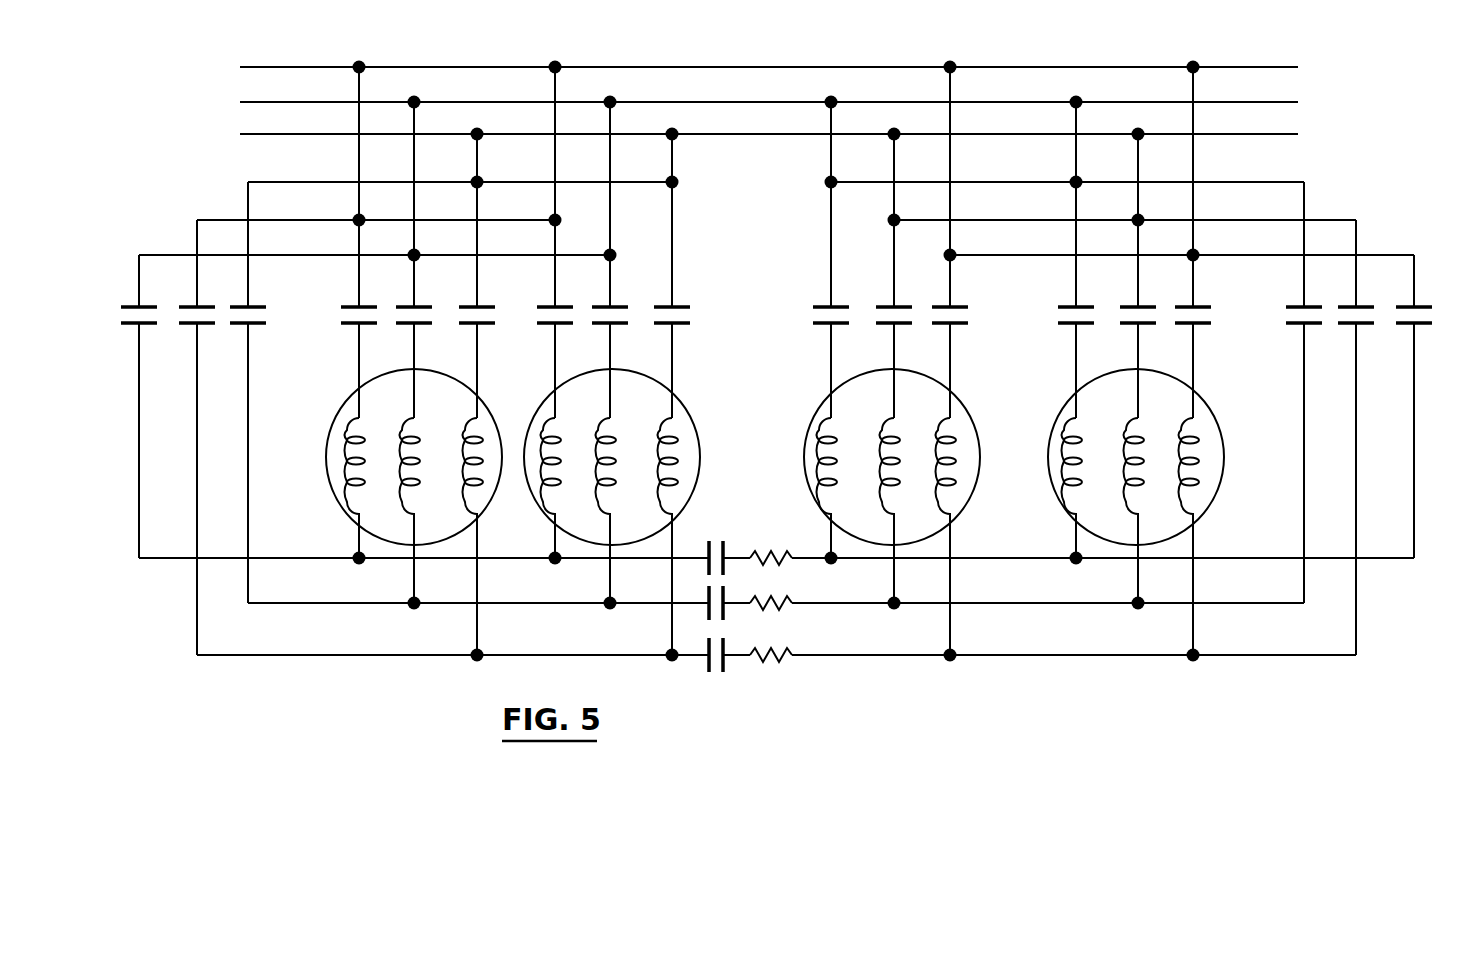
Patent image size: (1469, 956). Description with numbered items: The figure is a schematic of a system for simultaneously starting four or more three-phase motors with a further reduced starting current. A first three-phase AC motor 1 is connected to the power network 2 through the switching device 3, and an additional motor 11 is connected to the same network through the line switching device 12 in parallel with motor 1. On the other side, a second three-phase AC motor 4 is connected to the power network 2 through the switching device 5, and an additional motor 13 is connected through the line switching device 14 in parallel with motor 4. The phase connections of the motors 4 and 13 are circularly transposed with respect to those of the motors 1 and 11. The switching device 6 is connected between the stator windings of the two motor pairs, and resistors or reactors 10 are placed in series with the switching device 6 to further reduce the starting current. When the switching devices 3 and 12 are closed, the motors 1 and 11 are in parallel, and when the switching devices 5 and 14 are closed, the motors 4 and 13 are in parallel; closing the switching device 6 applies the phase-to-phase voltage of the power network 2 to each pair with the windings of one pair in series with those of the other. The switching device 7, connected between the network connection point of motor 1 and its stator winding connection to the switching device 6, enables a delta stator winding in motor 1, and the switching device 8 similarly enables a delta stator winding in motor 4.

The power network 2 is at (769, 83).
The switching device 7 is at (203, 418).
The switching device 3 is at (427, 242).
The line switching device 12 is at (631, 242).
The line switching device 14 is at (906, 242).
The switching device 5 is at (1142, 242).
The switching device 8 is at (1368, 418).
The first three-phase AC motor 1 is at (420, 512).
The additional motor 11 is at (624, 512).
The additional motor 13 is at (907, 512).
The second three-phase AC motor 4 is at (1144, 512).
The switching device 6 is at (712, 590).
The resistors or reactors 10 is at (777, 625).